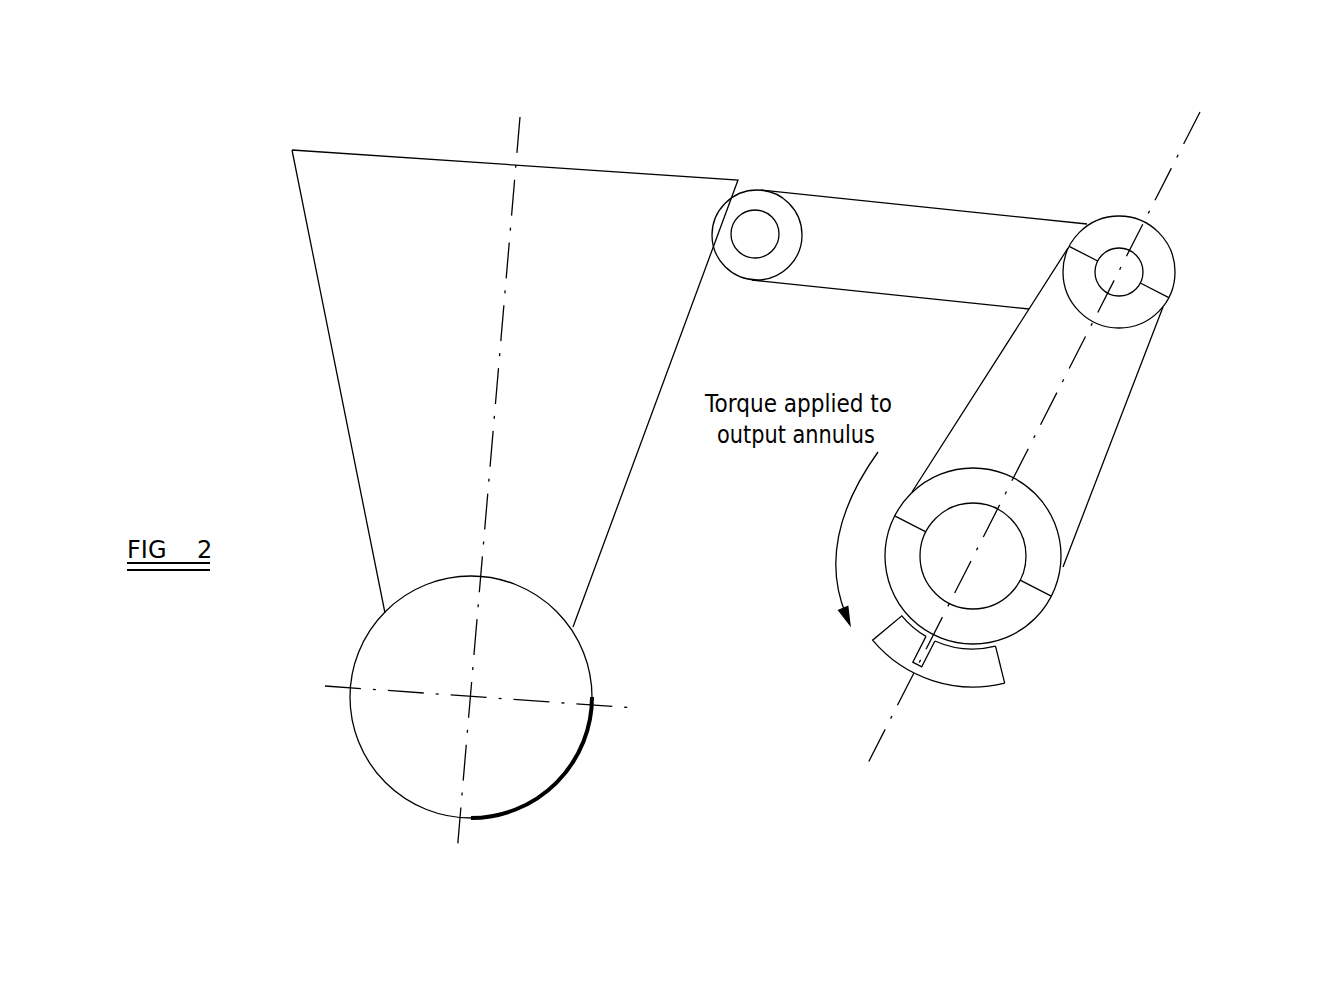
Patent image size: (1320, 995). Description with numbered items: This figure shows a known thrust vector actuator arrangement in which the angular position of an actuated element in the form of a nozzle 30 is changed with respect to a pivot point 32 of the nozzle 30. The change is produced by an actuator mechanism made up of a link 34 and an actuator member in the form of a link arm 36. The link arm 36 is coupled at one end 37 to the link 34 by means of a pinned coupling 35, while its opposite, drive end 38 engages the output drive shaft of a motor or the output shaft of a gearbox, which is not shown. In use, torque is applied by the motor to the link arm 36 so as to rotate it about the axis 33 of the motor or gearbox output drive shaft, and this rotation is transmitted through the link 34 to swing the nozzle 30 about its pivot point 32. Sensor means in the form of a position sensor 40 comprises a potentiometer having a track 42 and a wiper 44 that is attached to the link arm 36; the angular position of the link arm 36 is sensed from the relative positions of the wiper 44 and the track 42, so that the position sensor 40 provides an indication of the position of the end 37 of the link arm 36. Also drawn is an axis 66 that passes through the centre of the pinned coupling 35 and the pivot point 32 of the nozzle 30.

The nozzle 30 is at (515, 485).
The pivot point 32 is at (472, 697).
The link 34 is at (899, 249).
The link arm 36 is at (1037, 407).
The end 37 is at (1152, 250).
The pinned coupling 35 is at (1120, 273).
The axis 33 is at (975, 556).
The drive end 38 is at (1057, 593).
The position sensor 40 is at (983, 688).
The track 42 is at (972, 664).
The wiper 44 is at (925, 648).
The axis 66 is at (1163, 183).